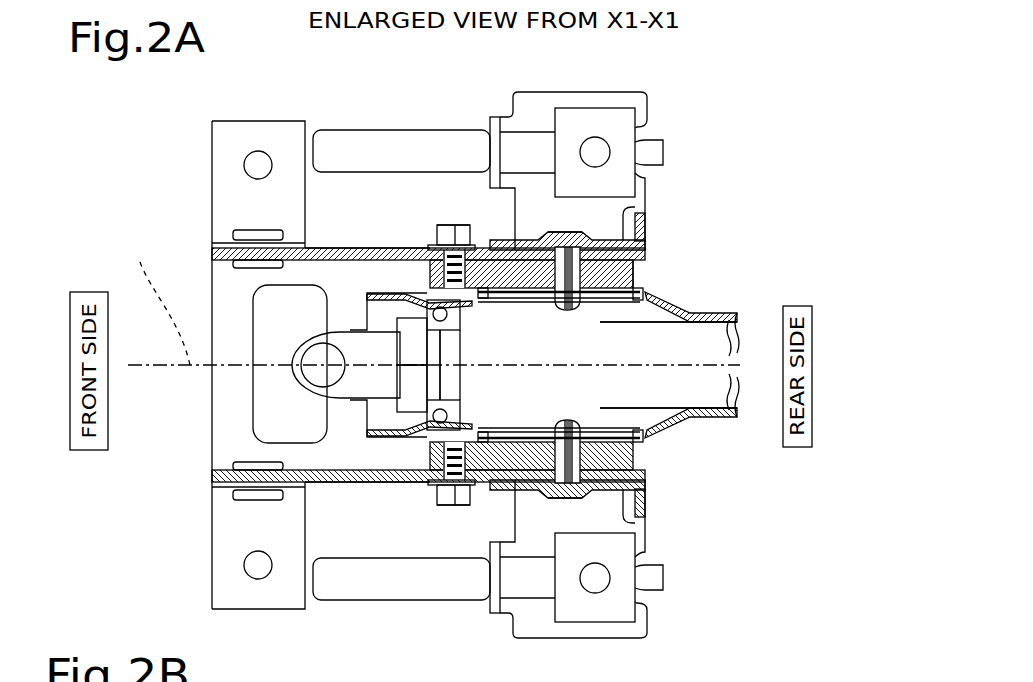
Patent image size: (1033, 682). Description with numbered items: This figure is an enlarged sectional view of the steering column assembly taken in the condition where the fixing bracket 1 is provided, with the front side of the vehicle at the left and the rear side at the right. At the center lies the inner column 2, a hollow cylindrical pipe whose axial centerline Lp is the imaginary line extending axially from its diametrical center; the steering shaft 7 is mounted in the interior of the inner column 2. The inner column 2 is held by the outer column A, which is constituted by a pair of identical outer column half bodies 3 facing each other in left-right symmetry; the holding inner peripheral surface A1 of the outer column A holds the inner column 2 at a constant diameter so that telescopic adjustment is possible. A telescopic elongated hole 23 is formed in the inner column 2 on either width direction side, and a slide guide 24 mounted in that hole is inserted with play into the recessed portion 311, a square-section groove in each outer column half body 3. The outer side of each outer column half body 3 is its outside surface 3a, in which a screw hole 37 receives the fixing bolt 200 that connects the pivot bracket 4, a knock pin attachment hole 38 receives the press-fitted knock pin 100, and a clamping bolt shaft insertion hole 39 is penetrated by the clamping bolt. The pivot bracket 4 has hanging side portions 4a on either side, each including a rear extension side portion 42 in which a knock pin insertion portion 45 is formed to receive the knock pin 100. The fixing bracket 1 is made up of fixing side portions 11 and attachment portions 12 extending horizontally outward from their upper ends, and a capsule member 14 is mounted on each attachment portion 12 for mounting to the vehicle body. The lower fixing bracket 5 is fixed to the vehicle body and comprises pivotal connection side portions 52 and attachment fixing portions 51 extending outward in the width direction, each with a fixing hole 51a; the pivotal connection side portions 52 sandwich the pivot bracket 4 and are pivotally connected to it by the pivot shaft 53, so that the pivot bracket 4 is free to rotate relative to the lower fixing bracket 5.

The fixing bracket 1 is at (614, 353).
The inner column 2 is at (690, 424).
The outer column half body 3 is at (614, 365).
The outside surface 3a is at (522, 247).
The pivot bracket 4 is at (428, 365).
The hanging side portion 4a is at (352, 248).
The lower fixing bracket 5 is at (242, 363).
The steering shaft 7 is at (672, 306).
The fixing side portion 11 is at (640, 215).
The attachment portion 12 is at (508, 366).
The capsule member 14 is at (583, 112).
The telescopic elongated hole 23 is at (485, 300).
The slide guide 24 is at (597, 300).
The screw hole 37 is at (440, 440).
The knock pin attachment hole 38 is at (565, 310).
The clamping bolt shaft insertion hole 39 is at (427, 370).
The rear extension side portion 42 is at (482, 258).
The knock pin insertion portion 45 is at (563, 240).
The attachment fixing portion 51 is at (212, 134).
The fixing hole 51a is at (262, 158).
The pivotal connection side portion 52 is at (215, 240).
The pivot shaft 53 is at (280, 232).
The knock pin 100 is at (540, 302).
The fixing bolt 200 is at (442, 240).
The recessed portion 311 is at (440, 298).
The outer column A is at (643, 265).
The holding inner peripheral surface A1 is at (440, 350).
The axial centerline Lp is at (160, 303).